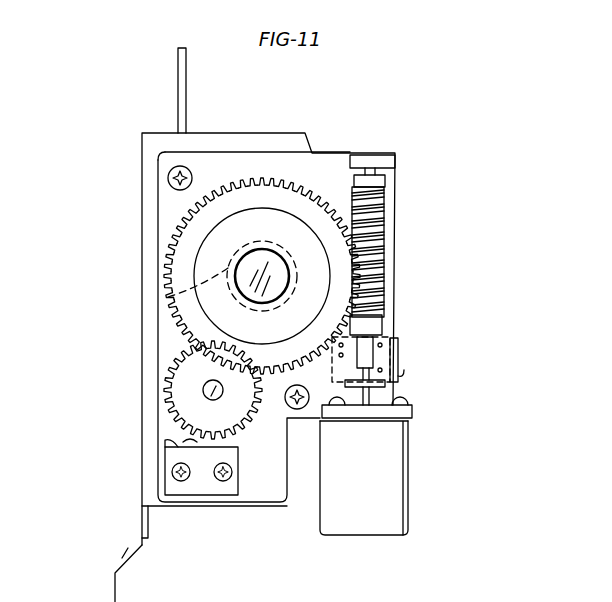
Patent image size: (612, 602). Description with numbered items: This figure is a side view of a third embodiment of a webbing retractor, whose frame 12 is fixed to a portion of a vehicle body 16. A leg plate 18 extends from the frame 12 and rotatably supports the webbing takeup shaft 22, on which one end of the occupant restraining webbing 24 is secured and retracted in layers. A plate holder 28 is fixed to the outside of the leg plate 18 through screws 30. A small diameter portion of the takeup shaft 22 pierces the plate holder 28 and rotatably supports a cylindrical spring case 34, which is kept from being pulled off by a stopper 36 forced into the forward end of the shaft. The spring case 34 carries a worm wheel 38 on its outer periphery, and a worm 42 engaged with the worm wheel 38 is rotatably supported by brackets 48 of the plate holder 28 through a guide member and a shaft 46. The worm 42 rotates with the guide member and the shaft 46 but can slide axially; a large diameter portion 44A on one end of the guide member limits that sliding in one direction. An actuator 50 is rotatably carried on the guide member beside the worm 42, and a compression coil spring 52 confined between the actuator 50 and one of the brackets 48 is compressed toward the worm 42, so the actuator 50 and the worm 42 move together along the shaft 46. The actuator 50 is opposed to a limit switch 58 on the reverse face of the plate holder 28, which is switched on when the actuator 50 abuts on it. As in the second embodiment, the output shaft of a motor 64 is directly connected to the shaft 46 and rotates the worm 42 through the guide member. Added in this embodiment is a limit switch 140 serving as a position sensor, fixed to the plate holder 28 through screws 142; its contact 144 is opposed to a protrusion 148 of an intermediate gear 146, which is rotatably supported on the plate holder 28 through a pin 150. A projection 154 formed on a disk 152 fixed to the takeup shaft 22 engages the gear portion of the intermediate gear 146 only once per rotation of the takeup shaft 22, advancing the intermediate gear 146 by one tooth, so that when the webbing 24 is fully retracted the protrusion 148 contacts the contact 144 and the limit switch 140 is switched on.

The frame 12 is at (148, 530).
The vehicle body 16 is at (130, 557).
The leg plate 18 is at (296, 145).
The webbing takeup shaft 22 is at (168, 297).
The occupant restraining webbing 24 is at (177, 92).
The plate holder 28 is at (267, 500).
The screws 30 is at (167, 184).
The spring case 34 is at (172, 254).
The stopper 36 is at (252, 296).
The worm wheel 38 is at (275, 373).
The worm 42 is at (384, 252).
The large diameter portion 44A is at (385, 180).
The shaft 46 is at (367, 408).
The brackets 48 is at (372, 160).
The actuator 50 is at (382, 325).
The compression coil spring 52 is at (398, 366).
The limit switch 58 is at (398, 376).
The motor 64 is at (404, 497).
The limit switch 140 is at (199, 496).
The screws 142 is at (173, 477).
The contact 144 is at (165, 441).
The intermediate gear 146 is at (166, 377).
The protrusion 148 is at (188, 443).
The pin 150 is at (205, 393).
The disk 152 is at (243, 215).
The projection 154 is at (235, 342).